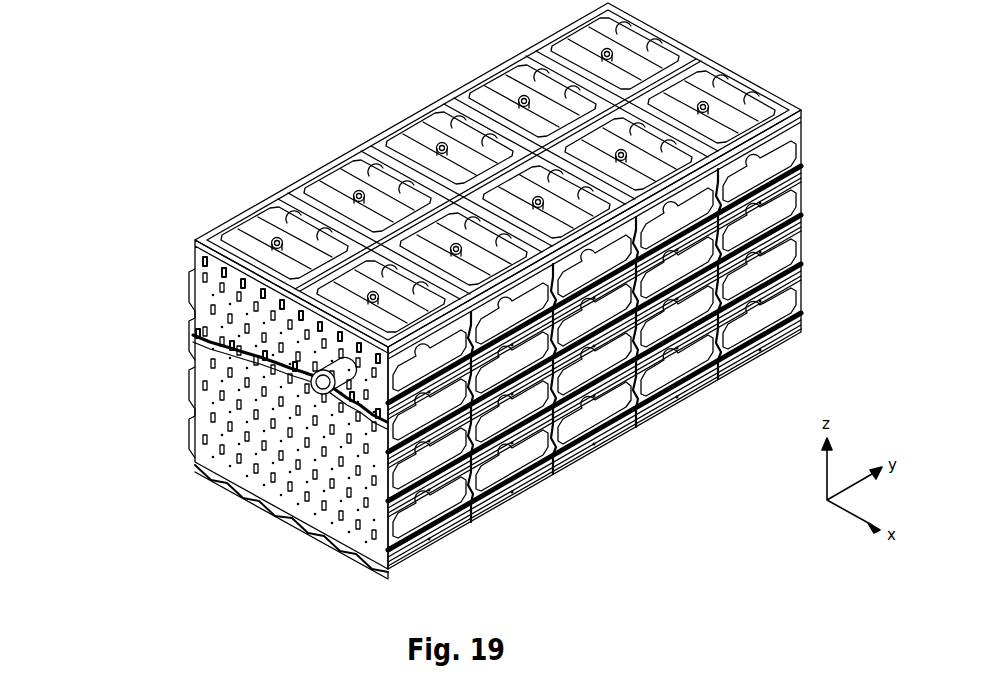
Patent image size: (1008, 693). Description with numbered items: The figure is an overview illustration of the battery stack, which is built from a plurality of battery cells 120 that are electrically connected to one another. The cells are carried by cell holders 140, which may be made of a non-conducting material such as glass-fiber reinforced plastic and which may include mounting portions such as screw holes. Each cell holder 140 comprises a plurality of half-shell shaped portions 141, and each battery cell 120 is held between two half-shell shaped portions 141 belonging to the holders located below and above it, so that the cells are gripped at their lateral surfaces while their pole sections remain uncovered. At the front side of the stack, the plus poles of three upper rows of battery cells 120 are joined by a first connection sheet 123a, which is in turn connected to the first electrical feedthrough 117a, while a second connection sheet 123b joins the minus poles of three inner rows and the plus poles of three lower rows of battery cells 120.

The cell holder 140 is at (517, 55).
The half-shell shaped portion 141 is at (393, 148).
The first connection sheet 123a is at (217, 307).
The second connection sheet 123b is at (197, 423).
The first electrical feedthrough 117a is at (313, 390).
The battery cell 120 is at (313, 540).